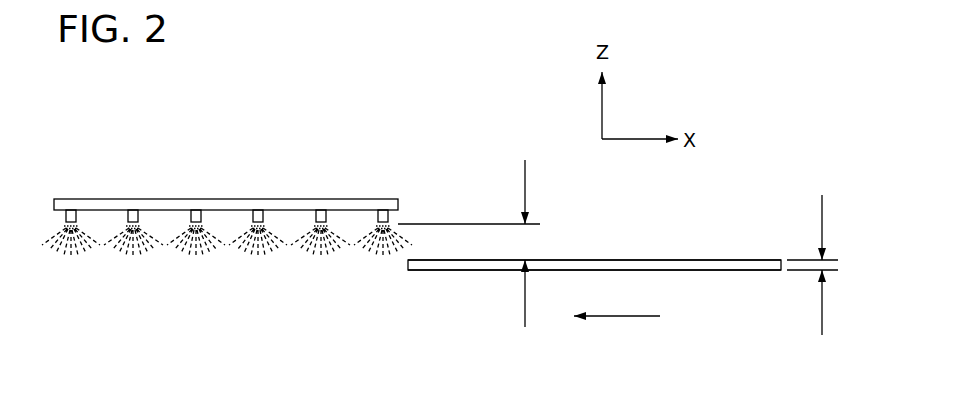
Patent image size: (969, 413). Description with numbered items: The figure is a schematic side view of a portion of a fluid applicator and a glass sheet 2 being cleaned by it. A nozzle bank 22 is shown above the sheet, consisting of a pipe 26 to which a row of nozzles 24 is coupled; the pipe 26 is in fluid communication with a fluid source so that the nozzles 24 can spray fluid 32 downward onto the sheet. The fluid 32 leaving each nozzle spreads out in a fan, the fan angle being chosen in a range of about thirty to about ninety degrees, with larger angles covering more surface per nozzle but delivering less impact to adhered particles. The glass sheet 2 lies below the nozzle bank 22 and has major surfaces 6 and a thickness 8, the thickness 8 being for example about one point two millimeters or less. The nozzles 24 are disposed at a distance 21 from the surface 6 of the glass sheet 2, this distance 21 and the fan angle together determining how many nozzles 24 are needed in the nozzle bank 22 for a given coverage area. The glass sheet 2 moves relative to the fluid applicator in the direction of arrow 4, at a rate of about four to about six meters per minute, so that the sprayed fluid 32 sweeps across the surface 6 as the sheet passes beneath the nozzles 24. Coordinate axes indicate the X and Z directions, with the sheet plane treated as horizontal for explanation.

The glass sheet 2 is at (714, 271).
The arrow 4 is at (618, 317).
The major surfaces 6 is at (684, 260).
The thickness 8 is at (822, 205).
The distance 21 is at (525, 182).
The nozzle bank 22 is at (227, 235).
The nozzles 24 is at (187, 216).
The pipe 26 is at (226, 205).
The fluid 32 is at (370, 253).